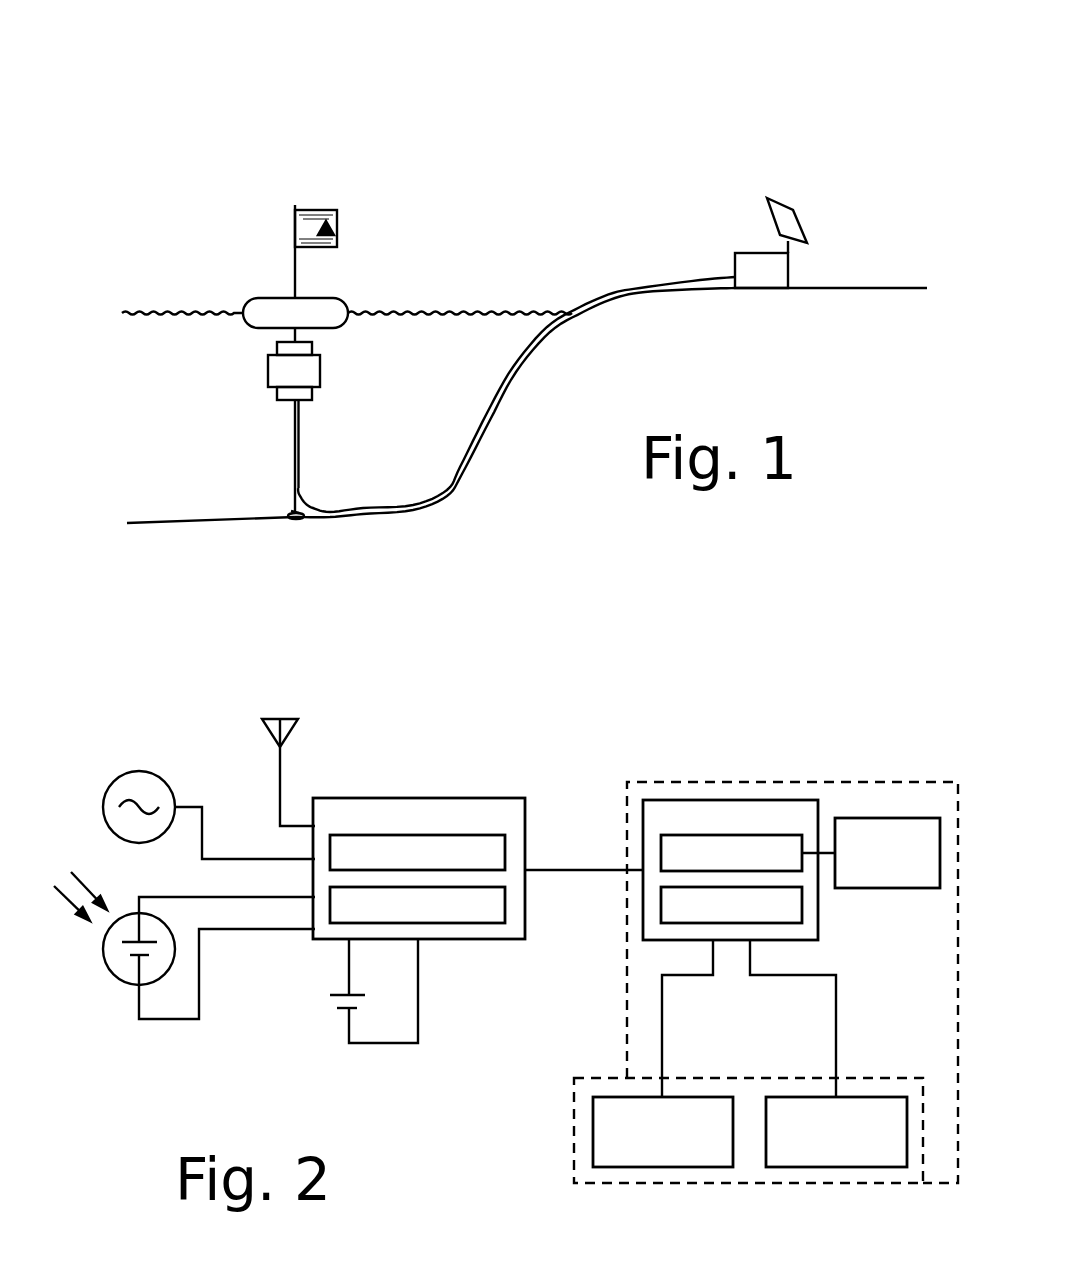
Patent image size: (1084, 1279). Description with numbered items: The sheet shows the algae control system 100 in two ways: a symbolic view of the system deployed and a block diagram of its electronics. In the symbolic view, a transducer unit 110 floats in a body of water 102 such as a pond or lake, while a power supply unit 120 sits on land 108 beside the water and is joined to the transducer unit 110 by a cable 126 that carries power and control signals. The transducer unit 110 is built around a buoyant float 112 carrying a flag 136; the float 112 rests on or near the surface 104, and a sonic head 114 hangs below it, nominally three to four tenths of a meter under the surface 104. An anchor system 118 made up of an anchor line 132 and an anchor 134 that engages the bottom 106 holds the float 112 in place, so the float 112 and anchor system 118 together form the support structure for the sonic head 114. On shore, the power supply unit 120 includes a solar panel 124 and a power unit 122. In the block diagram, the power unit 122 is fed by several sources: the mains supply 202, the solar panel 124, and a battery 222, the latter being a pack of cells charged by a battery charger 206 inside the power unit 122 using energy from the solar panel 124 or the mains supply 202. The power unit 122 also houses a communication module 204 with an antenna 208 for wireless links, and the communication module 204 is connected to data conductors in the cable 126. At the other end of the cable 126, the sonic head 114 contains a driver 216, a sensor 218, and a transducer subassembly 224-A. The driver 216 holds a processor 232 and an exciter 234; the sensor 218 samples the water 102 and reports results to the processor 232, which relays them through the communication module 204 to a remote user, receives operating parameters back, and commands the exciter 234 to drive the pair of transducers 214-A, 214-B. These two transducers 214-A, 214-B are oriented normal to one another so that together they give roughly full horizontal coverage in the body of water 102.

In FIG. 1, the algae control system 100 is at (164, 56).
In FIG. 2, the algae control system 100 is at (130, 670).
In FIG. 1, the body of water 102 is at (483, 202).
In FIG. 1, the surface 104 is at (142, 313).
In FIG. 1, the bottom 106 is at (170, 520).
In FIG. 1, the land 108 is at (878, 288).
In FIG. 1, the transducer unit 110 is at (298, 163).
In FIG. 2, the transducer unit 110 is at (480, 1199).
In FIG. 1, the float 112 is at (273, 298).
In FIG. 1, the sonic head 114 is at (320, 368).
In FIG. 2, the sonic head 114 is at (822, 782).
In FIG. 1, the anchor system 118 is at (293, 490).
In FIG. 1, the power supply unit 120 is at (694, 127).
In FIG. 2, the power supply unit 120 is at (554, 703).
In FIG. 1, the power unit 122 is at (752, 253).
In FIG. 2, the power unit 122 is at (415, 798).
In FIG. 1, the solar panel 124 is at (797, 215).
In FIG. 2, the solar panel 124 is at (134, 986).
In FIG. 1, the cable 126 is at (690, 280).
In FIG. 2, the cable 126 is at (567, 868).
In FIG. 1, the anchor line 132 is at (293, 450).
In FIG. 1, the anchor 134 is at (283, 520).
In FIG. 1, the flag 136 is at (293, 213).
In FIG. 2, the mains supply 202 is at (176, 796).
In FIG. 2, the communication module 204 is at (492, 835).
In FIG. 2, the battery charger 206 is at (493, 923).
In FIG. 2, the antenna 208 is at (298, 738).
In FIG. 2, the transducer 214-A is at (660, 1167).
In FIG. 2, the transducer 214-B is at (830, 1167).
In FIG. 2, the driver 216 is at (683, 800).
In FIG. 2, the sensor 218 is at (880, 818).
In FIG. 2, the battery 222 is at (343, 1010).
In FIG. 2, the transducer subassembly 224-A is at (867, 1077).
In FIG. 2, the processor 232 is at (773, 835).
In FIG. 2, the exciter 234 is at (802, 905).